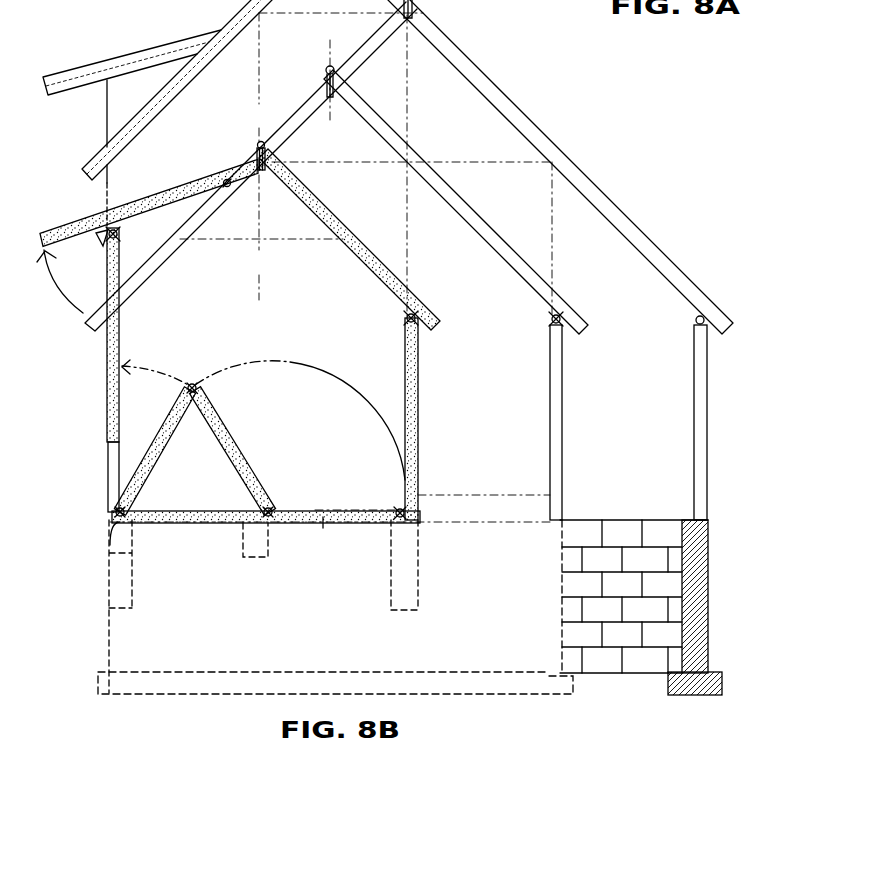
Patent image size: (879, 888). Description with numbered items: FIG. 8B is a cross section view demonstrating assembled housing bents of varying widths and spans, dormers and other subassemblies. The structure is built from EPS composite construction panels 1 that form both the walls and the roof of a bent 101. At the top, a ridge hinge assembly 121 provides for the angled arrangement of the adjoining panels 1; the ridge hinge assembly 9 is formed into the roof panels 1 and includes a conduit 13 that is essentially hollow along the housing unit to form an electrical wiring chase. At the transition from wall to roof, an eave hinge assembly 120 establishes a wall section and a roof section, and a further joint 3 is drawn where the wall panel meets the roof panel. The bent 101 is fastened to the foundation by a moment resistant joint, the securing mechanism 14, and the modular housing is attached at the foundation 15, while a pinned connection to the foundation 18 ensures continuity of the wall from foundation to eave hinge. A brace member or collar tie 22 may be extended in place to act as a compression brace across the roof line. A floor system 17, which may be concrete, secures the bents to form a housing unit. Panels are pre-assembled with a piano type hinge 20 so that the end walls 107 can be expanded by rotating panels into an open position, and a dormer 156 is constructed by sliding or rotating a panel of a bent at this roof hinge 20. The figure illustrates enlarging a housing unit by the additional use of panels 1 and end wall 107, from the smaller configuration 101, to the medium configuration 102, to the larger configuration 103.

The panel 1 is at (143, 211).
The pivot connector 3 is at (120, 237).
The ridge hinge assembly 9 is at (259, 81).
The conduit 13 is at (263, 176).
The securing mechanism 14 is at (108, 534).
The foundation 15 is at (118, 580).
The floor system 17 is at (330, 534).
The foundation 18 is at (290, 683).
The piano type hinge 20 is at (226, 179).
The collar tie 22 is at (265, 237).
The bent 101 is at (440, 385).
The medium configuration 102 is at (584, 388).
The larger configuration 103 is at (727, 400).
The end wall 107 is at (262, 445).
The eave hinge assembly 120 is at (83, 201).
The ridge hinge assembly 121 is at (291, 153).
The dormer 156 is at (175, 199).